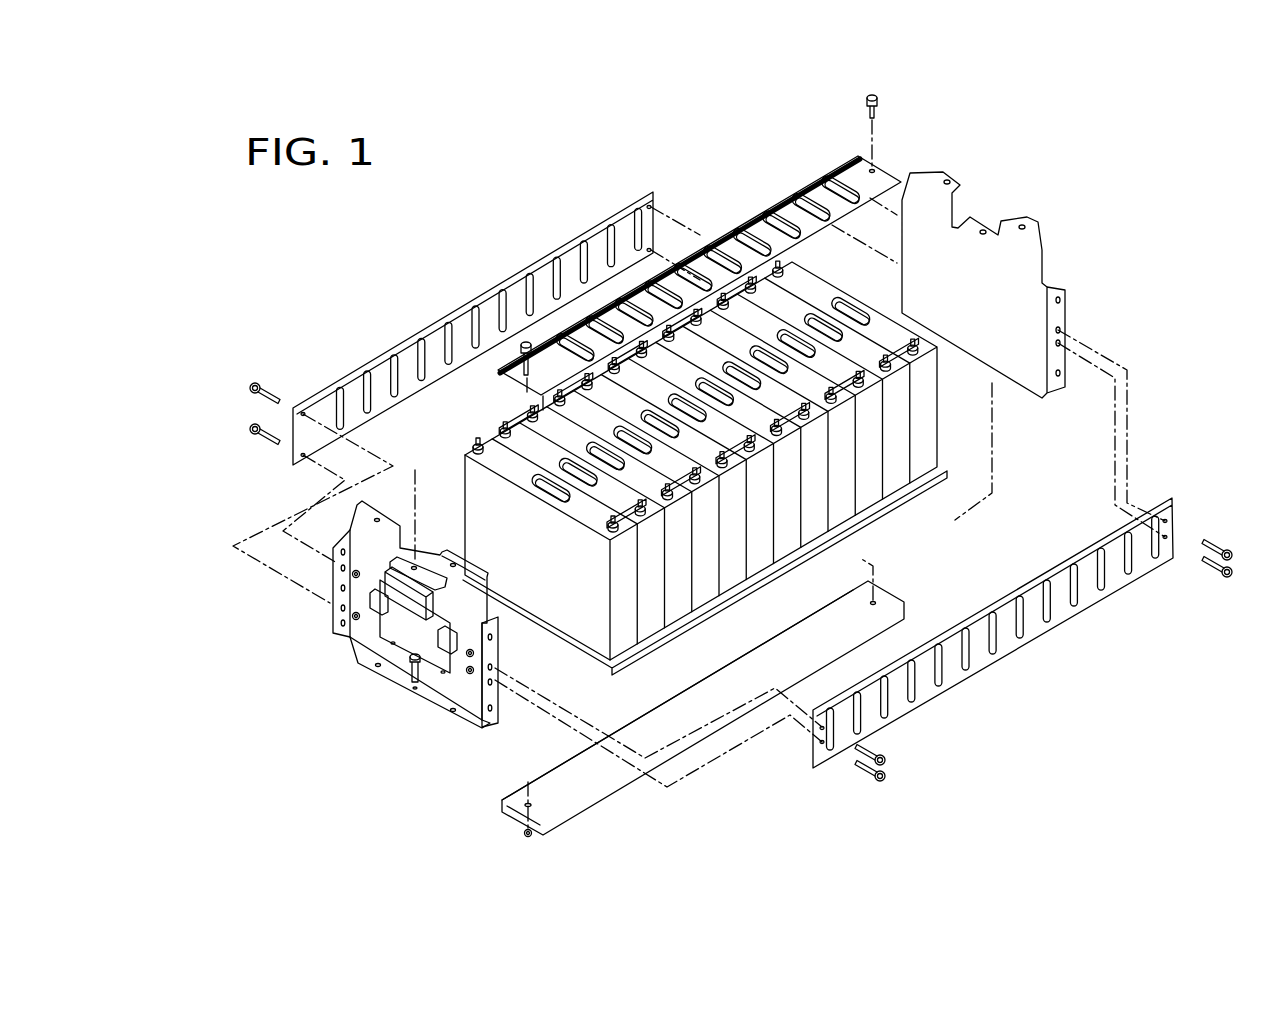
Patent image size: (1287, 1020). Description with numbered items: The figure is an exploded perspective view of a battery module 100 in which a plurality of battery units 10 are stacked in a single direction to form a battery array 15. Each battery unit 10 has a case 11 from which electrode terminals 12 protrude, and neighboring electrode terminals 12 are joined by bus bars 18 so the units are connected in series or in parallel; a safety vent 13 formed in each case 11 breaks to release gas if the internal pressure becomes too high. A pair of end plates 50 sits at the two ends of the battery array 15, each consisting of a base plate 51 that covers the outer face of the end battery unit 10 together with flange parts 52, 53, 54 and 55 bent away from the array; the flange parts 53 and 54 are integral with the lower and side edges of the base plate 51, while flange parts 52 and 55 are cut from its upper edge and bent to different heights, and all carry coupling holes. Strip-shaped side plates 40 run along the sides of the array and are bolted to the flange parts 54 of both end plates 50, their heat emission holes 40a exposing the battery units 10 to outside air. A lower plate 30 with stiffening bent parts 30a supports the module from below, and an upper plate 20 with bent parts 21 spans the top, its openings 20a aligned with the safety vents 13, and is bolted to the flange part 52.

The battery module 100 is at (1073, 178).
The battery unit 10 is at (880, 519).
The case 11 is at (475, 450).
The electrode terminal 12 is at (513, 425).
The safety vent 13 is at (555, 497).
The battery array 15 is at (838, 512).
The bus bar 18 is at (855, 378).
The upper plate 20 is at (800, 207).
The opening 20a is at (758, 233).
The bent part 21 is at (830, 170).
The lower plate 30 is at (496, 789).
The bent part 30a is at (620, 783).
The side plate 40 is at (432, 338).
The heat emission hole 40a is at (505, 303).
The end plate 50 is at (1058, 261).
The base plate 51 is at (367, 635).
The flange part 52 is at (425, 572).
The flange part 53 is at (398, 678).
The flange part 54 is at (337, 615).
The flange part 55 is at (472, 568).